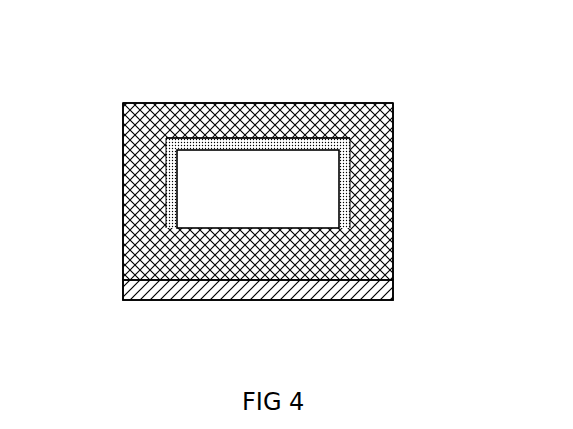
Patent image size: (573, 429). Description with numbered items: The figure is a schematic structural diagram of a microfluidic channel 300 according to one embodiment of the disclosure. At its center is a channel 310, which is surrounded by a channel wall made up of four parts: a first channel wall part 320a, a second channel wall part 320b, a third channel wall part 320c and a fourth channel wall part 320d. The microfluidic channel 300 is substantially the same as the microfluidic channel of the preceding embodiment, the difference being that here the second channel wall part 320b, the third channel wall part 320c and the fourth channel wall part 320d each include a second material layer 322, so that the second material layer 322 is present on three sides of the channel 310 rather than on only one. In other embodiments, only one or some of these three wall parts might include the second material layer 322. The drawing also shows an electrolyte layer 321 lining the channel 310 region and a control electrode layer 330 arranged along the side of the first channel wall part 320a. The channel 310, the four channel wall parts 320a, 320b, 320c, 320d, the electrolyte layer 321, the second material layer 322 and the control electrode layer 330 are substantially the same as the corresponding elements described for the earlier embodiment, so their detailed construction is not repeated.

The microfluidic channel 300 is at (108, 92).
The channel 310 is at (315, 205).
The first channel wall part 320a is at (332, 286).
The second channel wall part 320b is at (385, 210).
The third channel wall part 320c is at (317, 112).
The fourth channel wall part 320d is at (148, 196).
The electrolyte layer 321 is at (380, 260).
The second material layer 322 is at (239, 120).
The control electrode layer 330 is at (393, 287).